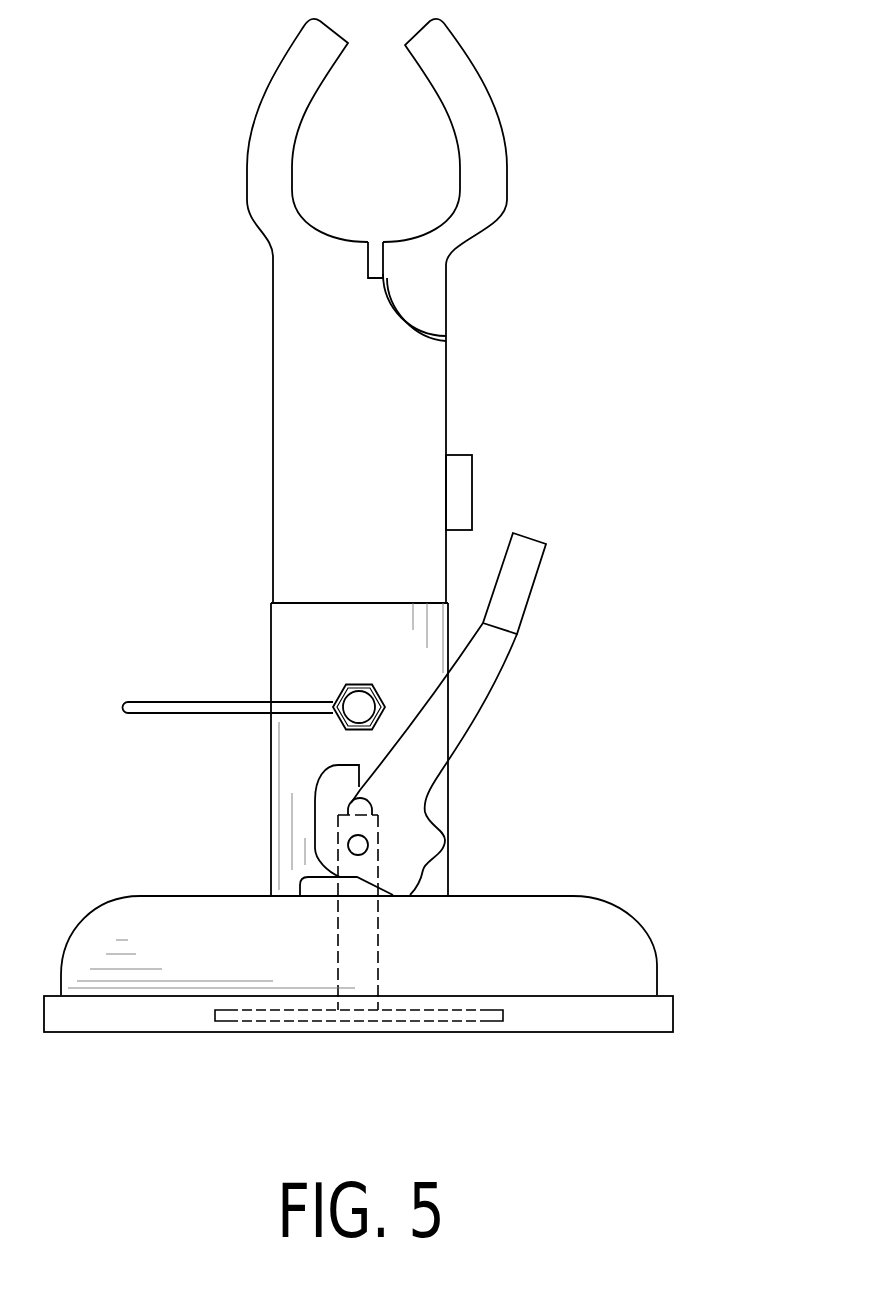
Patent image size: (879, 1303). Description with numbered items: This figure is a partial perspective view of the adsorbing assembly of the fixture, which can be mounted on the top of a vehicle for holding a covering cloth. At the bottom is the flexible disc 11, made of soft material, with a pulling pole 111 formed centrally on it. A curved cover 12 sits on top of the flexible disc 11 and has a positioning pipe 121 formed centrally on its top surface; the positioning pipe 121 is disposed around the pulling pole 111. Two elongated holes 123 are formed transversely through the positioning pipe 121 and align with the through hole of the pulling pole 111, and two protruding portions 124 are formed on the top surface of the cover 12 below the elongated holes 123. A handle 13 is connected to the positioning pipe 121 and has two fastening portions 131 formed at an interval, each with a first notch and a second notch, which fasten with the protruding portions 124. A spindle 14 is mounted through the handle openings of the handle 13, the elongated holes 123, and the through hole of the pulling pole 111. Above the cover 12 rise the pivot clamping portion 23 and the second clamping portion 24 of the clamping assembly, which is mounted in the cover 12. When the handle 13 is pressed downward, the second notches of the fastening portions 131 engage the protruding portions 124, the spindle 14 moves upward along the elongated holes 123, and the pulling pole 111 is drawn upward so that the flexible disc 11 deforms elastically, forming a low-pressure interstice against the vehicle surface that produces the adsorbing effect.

The flexible disc 11 is at (595, 1023).
The cover 12 is at (603, 917).
The pulling pole 111 is at (380, 927).
The positioning pipe 121 is at (290, 628).
The elongated holes 123 is at (367, 803).
The protruding portions 124 is at (317, 888).
The handle 13 is at (525, 545).
The fastening portions 131 is at (435, 870).
The spindle 14 is at (360, 843).
The pivot clamping portion 23 is at (467, 92).
The second clamping portion 24 is at (272, 112).